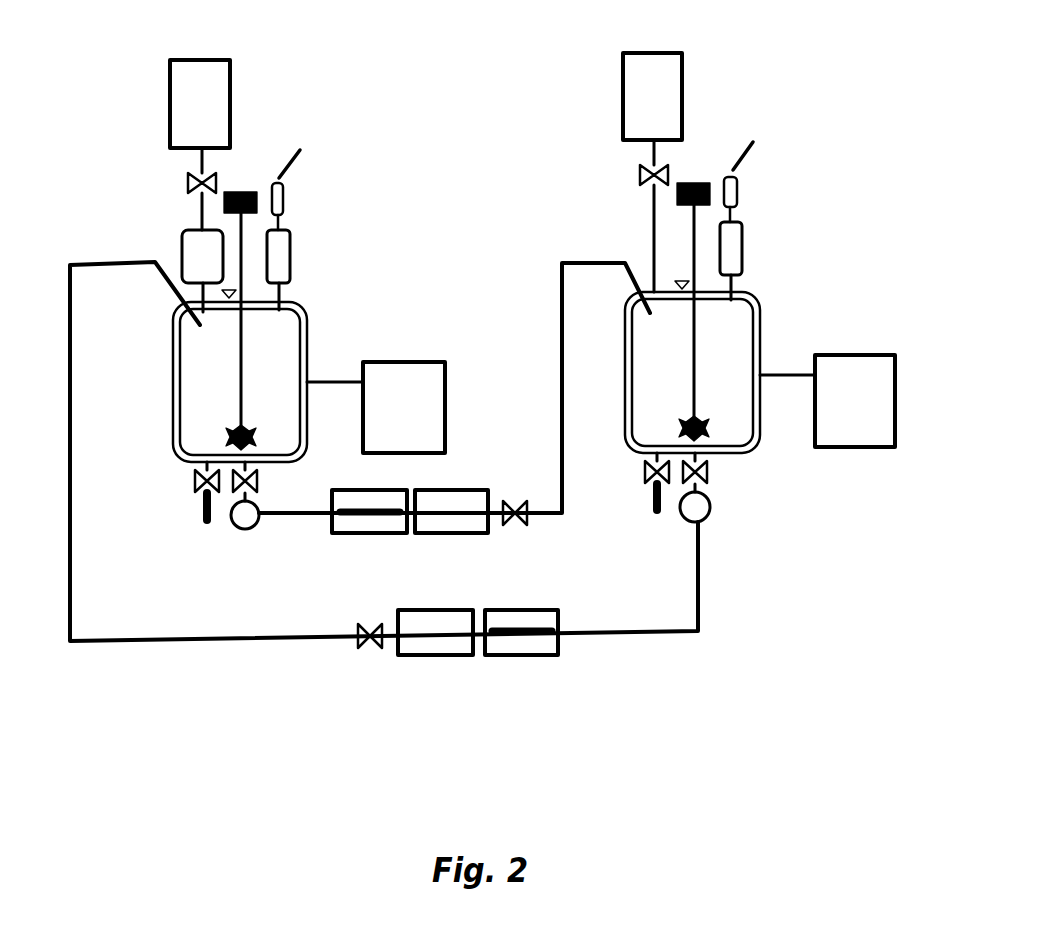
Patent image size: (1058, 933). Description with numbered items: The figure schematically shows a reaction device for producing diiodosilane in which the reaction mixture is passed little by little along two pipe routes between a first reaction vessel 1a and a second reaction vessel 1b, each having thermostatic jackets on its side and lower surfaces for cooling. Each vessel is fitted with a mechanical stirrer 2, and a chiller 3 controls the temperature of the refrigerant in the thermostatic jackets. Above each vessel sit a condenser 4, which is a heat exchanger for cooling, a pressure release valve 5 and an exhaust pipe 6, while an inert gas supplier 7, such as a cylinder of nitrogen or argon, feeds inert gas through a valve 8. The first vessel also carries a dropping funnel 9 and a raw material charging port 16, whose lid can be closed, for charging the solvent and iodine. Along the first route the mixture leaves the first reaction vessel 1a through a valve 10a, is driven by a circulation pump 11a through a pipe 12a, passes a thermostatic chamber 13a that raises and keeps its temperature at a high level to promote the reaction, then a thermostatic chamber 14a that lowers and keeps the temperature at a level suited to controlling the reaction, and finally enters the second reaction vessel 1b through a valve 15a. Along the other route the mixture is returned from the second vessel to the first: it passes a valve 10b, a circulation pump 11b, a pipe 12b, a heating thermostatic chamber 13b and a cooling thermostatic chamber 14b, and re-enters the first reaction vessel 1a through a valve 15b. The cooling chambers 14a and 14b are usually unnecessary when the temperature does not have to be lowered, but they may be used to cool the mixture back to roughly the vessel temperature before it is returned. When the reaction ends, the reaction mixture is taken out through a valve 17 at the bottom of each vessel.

The first reaction vessel 1a is at (310, 321).
The second reaction vessel 1b is at (764, 309).
The mechanical stirrer 2 is at (254, 191).
The chiller 3 is at (449, 384).
The condenser 4 is at (294, 255).
The pressure release valve 5 is at (290, 197).
The exhaust pipe 6 is at (305, 160).
The inert gas supplier 7 is at (236, 92).
The valve 8 is at (185, 182).
The dropping funnel 9 is at (179, 251).
The valve 10a is at (259, 482).
The valve 10b is at (709, 479).
The circulation pump 11a is at (247, 531).
The circulation pump 11b is at (708, 516).
The pipe 12a is at (362, 502).
The pipe 12b is at (527, 619).
The thermostatic chamber 13a is at (365, 536).
The thermostatic chamber 13b is at (522, 658).
The thermostatic chamber 14a is at (450, 536).
The thermostatic chamber 14b is at (432, 658).
The valve 15a is at (516, 526).
The valve 15b is at (370, 650).
The raw material charging port 16 is at (284, 285).
The valve 17 is at (194, 482).